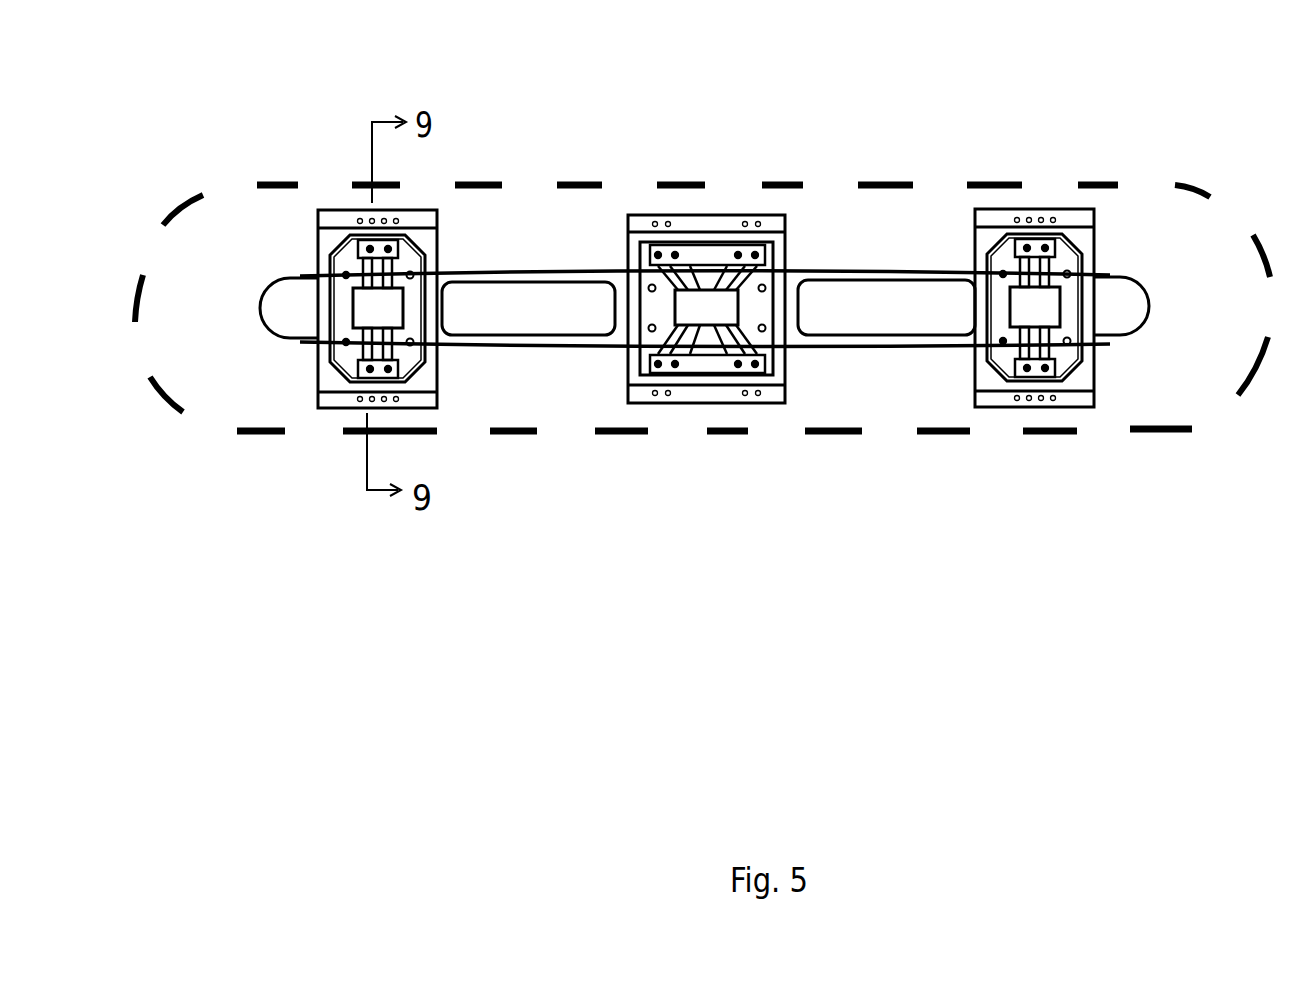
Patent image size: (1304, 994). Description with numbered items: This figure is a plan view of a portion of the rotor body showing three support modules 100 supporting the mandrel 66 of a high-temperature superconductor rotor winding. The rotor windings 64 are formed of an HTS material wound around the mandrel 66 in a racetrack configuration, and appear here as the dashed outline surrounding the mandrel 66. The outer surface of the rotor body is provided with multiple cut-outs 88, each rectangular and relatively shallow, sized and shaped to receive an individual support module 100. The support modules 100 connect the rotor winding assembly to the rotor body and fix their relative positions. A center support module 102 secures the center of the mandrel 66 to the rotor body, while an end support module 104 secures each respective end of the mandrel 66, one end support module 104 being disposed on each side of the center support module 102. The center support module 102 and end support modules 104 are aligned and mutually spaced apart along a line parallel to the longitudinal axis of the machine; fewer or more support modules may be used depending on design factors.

The rotor windings 64 is at (830, 435).
The mandrel 66 is at (820, 272).
The cut-outs 88 is at (778, 226).
The support modules 100 is at (789, 226).
The center support module 102 is at (772, 240).
The end support module 104 is at (430, 236).